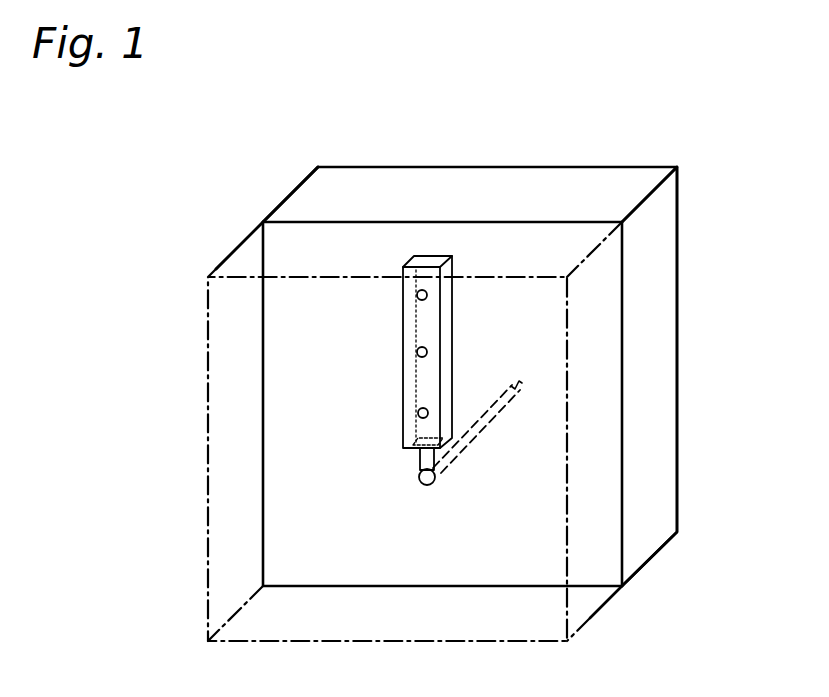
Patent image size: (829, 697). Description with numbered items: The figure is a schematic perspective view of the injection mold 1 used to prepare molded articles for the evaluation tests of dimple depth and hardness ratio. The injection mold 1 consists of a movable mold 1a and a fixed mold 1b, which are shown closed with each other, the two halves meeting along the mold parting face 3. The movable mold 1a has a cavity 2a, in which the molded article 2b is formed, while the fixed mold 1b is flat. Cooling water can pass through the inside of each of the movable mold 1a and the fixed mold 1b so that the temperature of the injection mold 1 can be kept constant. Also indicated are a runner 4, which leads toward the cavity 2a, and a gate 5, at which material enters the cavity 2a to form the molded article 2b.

The injection mold 1 is at (457, 150).
The movable mold 1a is at (226, 251).
The fixed mold 1b is at (285, 189).
The cavity 2a is at (590, 352).
The molded article 2b is at (448, 352).
The mold parting face 3 is at (622, 220).
The runner 4 is at (443, 441).
The gate 5 is at (420, 452).